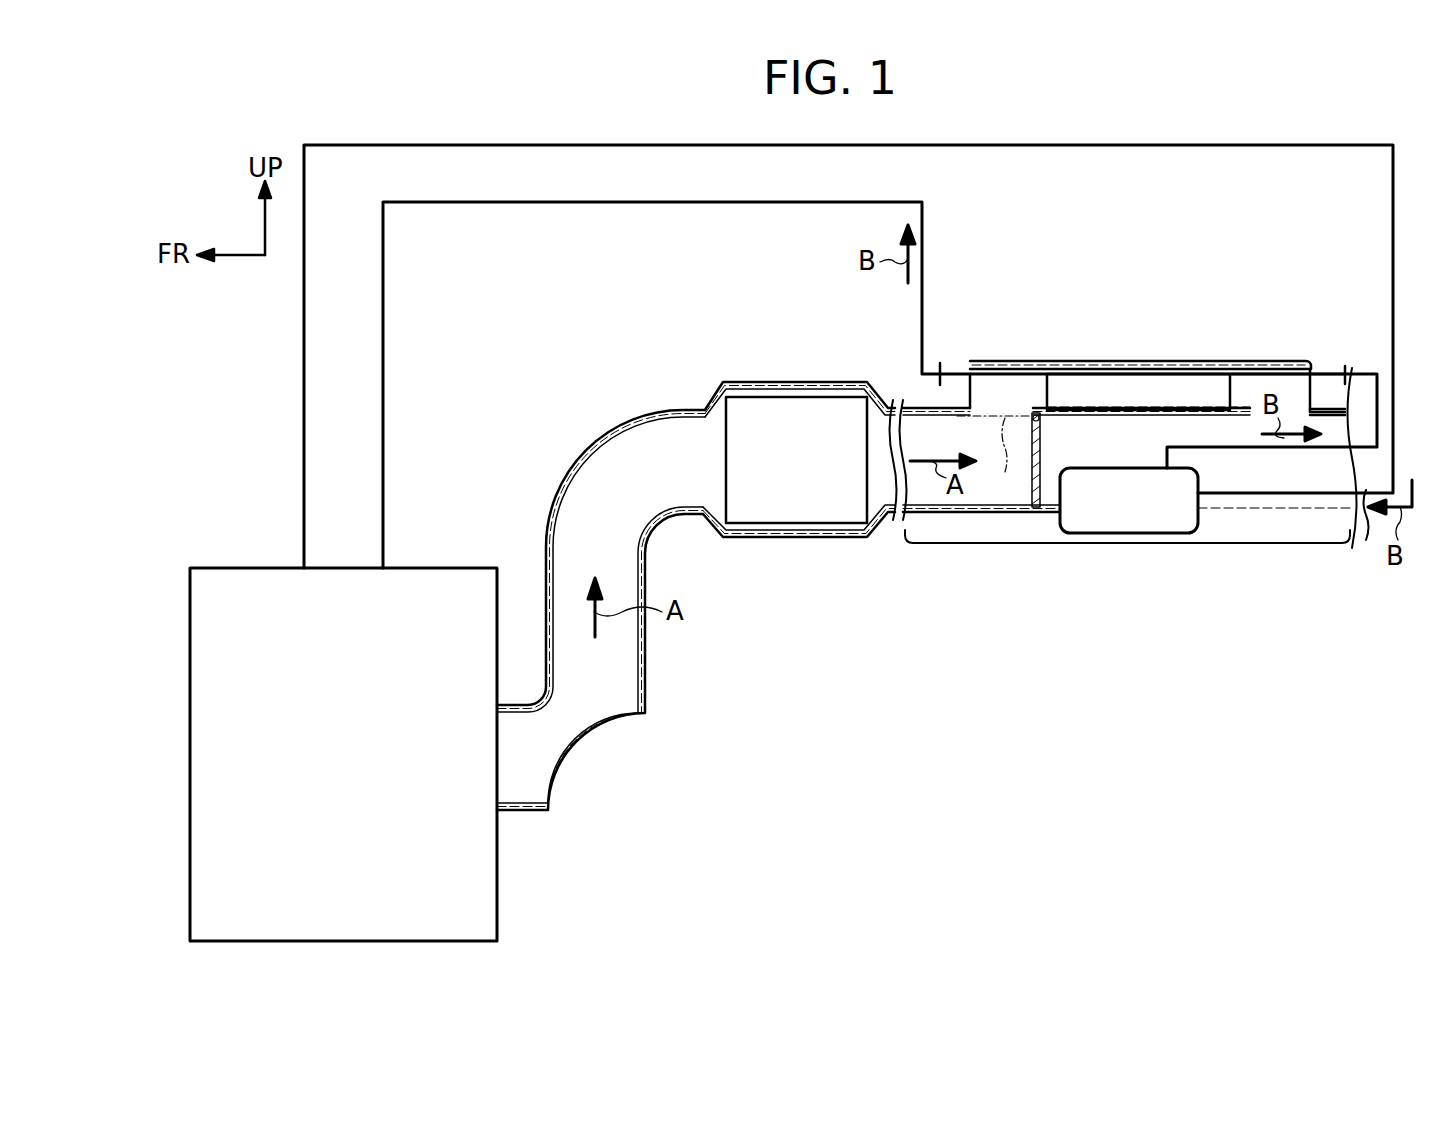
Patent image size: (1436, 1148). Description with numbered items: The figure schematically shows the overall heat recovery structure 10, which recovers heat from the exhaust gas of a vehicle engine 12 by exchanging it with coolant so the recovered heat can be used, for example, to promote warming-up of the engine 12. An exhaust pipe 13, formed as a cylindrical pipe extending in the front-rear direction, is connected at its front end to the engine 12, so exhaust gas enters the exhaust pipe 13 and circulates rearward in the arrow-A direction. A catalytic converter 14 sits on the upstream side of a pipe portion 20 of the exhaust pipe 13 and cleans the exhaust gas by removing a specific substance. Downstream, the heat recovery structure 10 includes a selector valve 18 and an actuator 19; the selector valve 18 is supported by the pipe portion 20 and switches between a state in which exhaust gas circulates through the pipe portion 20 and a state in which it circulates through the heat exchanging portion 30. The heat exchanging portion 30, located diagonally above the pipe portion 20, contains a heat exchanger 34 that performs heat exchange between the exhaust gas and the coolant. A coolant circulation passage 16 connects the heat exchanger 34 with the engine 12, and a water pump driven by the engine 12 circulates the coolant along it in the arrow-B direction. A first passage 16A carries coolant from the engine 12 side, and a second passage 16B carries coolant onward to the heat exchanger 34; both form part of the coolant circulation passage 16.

The heat recovery structure 10 is at (1301, 643).
The engine 12 is at (248, 568).
The exhaust pipe 13 is at (648, 403).
The catalytic converter 14 is at (790, 403).
The coolant circulation passage 16 is at (605, 209).
The first passage 16A is at (1355, 535).
The second passage 16B is at (1328, 365).
The selector valve 18 is at (1073, 437).
The actuator 19 is at (1131, 489).
The pipe portion 20 is at (1127, 557).
The heat exchanging portion 30 is at (1290, 352).
The heat exchanger 34 is at (1137, 370).